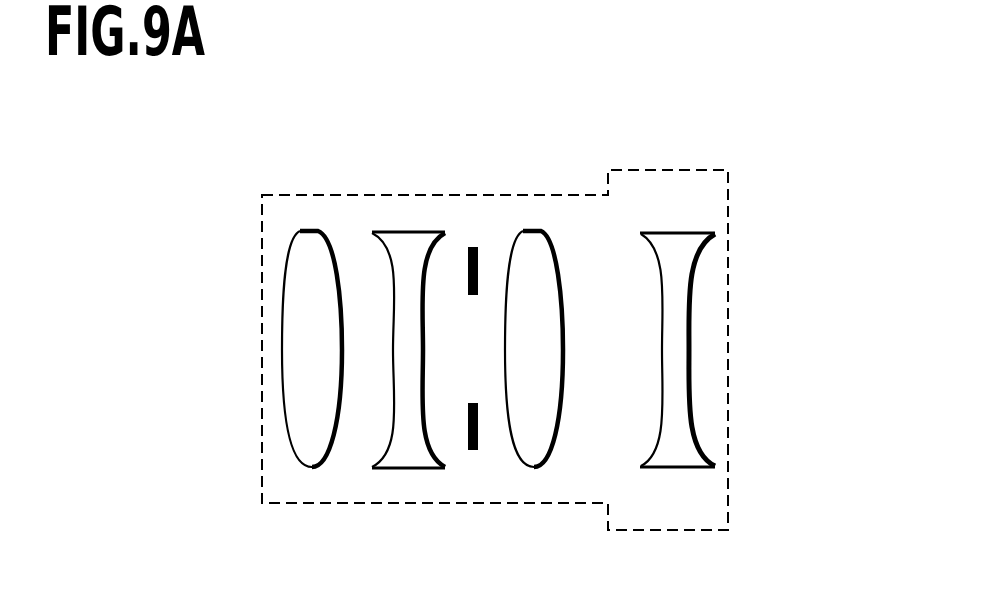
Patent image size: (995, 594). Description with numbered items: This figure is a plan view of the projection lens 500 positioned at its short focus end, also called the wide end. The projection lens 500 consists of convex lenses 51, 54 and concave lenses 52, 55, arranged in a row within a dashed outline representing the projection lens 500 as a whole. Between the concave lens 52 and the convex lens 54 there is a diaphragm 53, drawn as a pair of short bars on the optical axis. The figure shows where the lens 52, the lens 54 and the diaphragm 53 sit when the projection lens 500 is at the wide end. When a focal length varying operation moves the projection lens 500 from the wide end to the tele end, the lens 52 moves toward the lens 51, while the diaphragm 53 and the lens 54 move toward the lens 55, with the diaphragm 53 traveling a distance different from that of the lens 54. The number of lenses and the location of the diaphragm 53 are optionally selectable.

The projection lens 500 is at (728, 357).
The convex lens 51 is at (306, 231).
The concave lens 52 is at (403, 593).
The diaphragm 53 is at (484, 593).
The convex lens 54 is at (558, 593).
The concave lens 55 is at (683, 233).